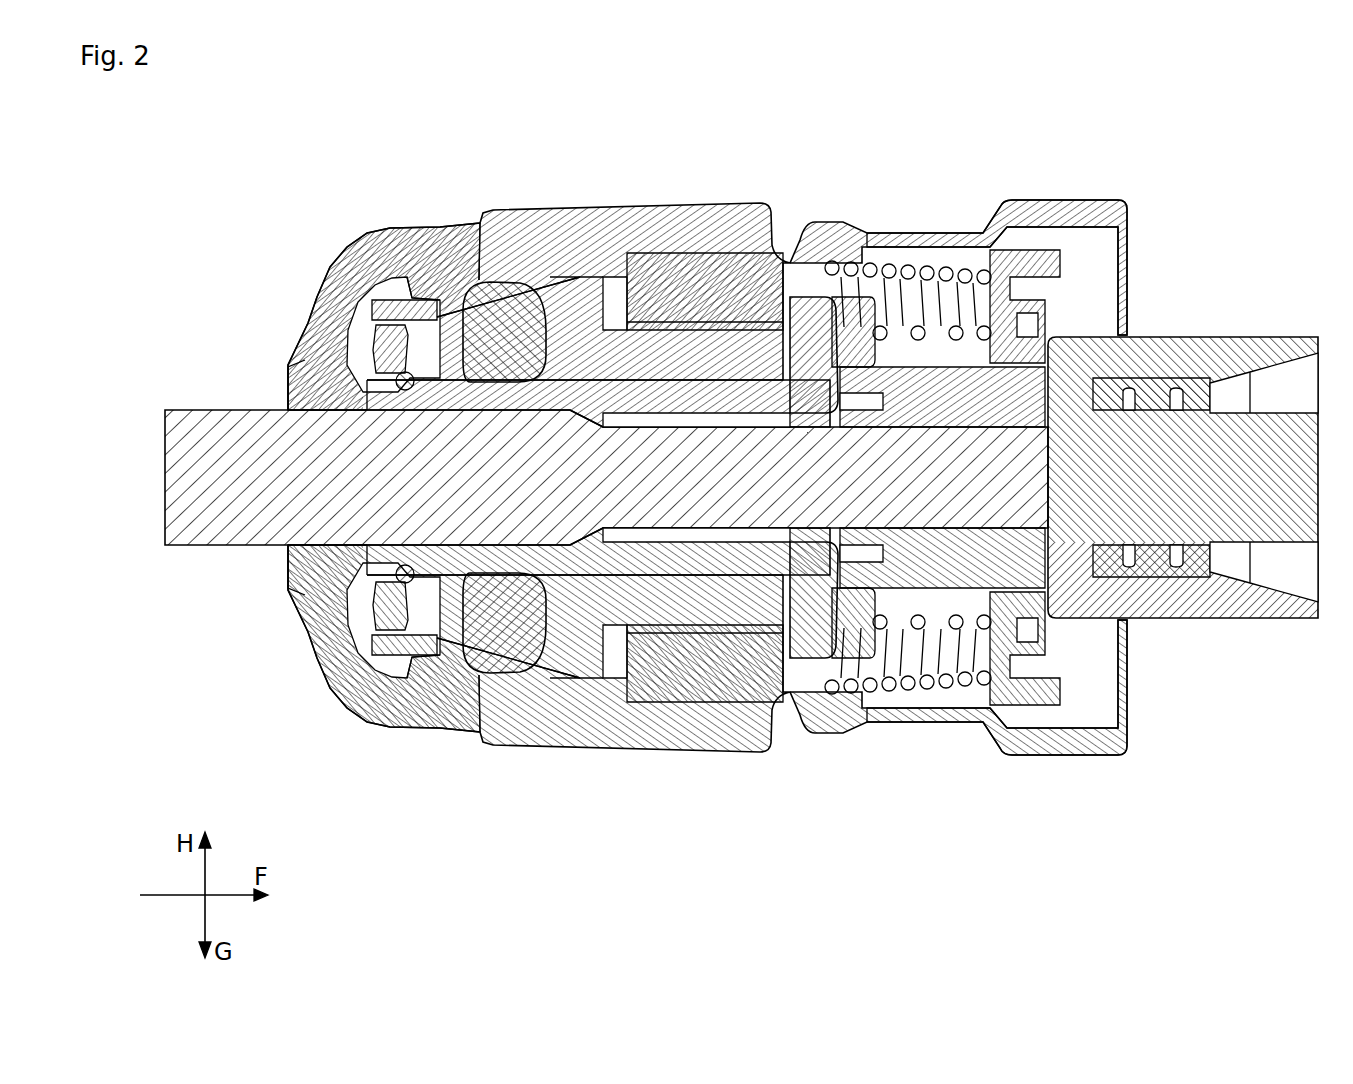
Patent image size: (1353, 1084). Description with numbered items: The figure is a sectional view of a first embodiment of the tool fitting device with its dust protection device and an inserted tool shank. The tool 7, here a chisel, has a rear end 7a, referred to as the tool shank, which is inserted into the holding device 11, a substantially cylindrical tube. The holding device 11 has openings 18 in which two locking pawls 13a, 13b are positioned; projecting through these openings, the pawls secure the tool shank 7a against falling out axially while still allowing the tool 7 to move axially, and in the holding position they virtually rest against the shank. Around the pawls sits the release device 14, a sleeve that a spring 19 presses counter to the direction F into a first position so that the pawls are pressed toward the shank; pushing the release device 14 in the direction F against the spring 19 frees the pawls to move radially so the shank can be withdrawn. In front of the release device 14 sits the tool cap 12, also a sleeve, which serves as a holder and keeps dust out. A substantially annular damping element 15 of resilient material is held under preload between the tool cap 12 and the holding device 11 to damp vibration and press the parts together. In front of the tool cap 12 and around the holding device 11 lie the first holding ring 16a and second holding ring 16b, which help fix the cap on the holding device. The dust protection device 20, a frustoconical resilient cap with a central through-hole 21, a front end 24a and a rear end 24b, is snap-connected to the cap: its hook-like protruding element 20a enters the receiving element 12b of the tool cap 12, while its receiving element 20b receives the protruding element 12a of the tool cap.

The tool 7 is at (168, 517).
The rear end 7a is at (1010, 512).
The holding device 11 is at (637, 383).
The tool cap 12 is at (592, 243).
The protruding element 12a is at (387, 303).
The receiving element 12b is at (398, 275).
The locking pawl 13a is at (800, 387).
The locking pawl 13b is at (780, 580).
The release device 14 is at (935, 237).
The damping element 15 is at (515, 312).
The first holding ring 16a is at (417, 647).
The second holding ring 16b is at (387, 613).
The openings 18 is at (866, 565).
The spring 19 is at (955, 655).
The dust protection device 20 is at (330, 587).
The protruding element 20a is at (445, 278).
The receiving element 20b is at (383, 232).
The central through-hole 21 is at (317, 413).
The front end 24a is at (300, 360).
The rear end 24b is at (452, 717).